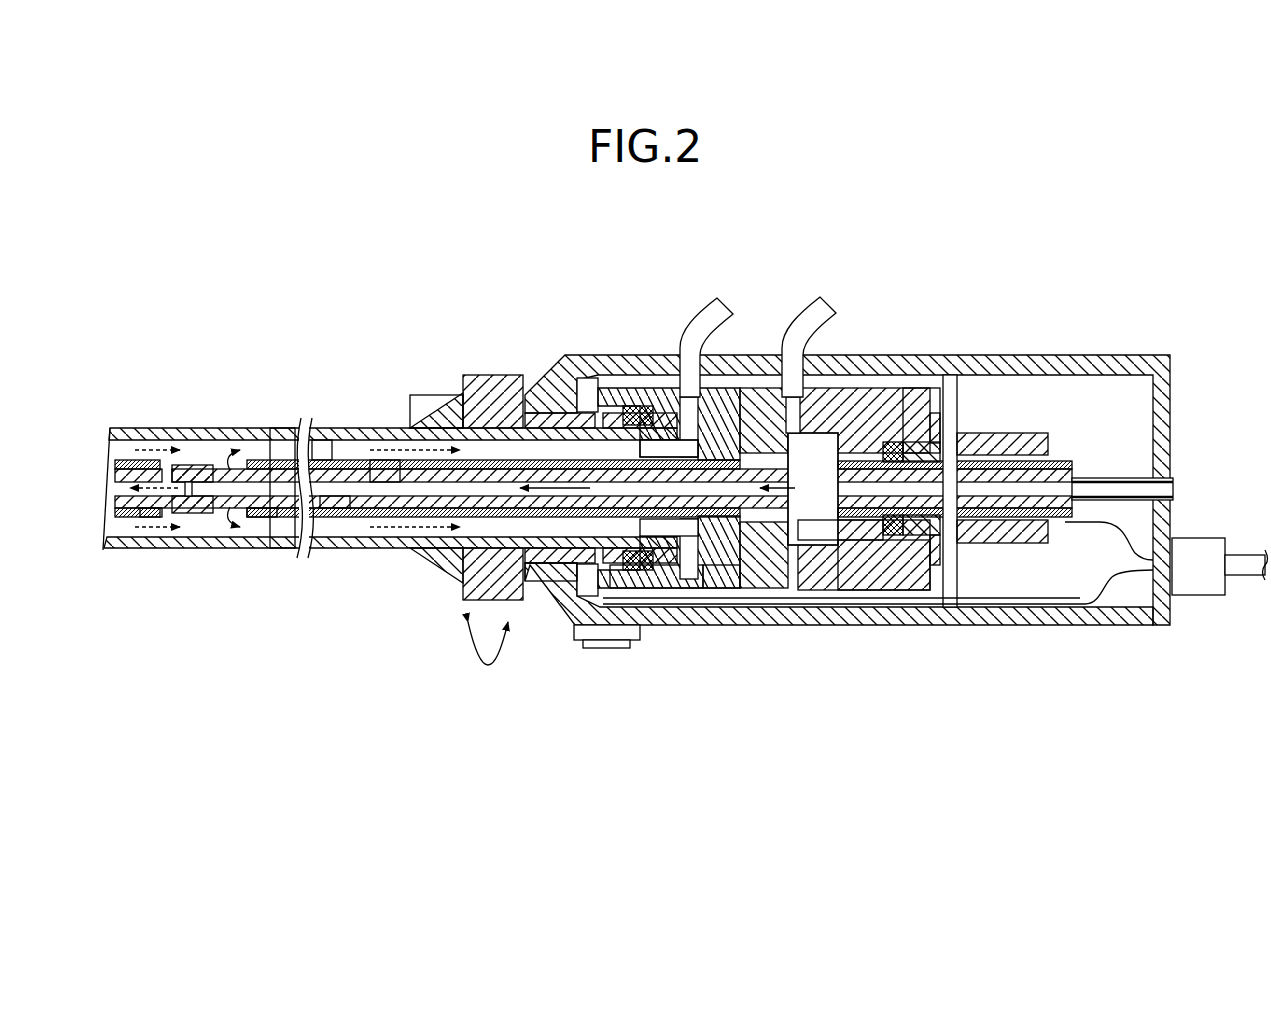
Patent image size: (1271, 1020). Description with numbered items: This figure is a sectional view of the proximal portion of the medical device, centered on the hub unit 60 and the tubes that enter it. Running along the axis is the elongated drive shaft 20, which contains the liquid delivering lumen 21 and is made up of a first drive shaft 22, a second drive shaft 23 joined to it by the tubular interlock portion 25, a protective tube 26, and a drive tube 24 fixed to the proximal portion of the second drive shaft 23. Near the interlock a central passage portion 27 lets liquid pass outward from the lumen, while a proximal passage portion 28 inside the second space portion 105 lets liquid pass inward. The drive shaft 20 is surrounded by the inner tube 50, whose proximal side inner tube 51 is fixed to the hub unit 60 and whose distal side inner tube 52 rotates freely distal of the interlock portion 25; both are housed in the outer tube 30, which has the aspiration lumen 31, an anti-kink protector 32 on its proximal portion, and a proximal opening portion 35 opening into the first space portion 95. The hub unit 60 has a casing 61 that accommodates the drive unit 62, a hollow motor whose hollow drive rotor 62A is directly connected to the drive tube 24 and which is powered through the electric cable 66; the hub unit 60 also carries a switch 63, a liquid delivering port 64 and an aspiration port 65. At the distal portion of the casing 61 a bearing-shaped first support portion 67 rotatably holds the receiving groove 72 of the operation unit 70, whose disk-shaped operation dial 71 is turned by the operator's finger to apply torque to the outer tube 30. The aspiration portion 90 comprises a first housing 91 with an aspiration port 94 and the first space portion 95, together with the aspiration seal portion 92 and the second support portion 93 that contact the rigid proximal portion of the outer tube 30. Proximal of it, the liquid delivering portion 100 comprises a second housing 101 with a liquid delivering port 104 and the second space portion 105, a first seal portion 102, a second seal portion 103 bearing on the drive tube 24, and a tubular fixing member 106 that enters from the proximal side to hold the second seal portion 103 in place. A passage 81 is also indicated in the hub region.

The drive shaft 20 is at (255, 469).
The liquid delivering lumen 21 is at (335, 508).
The first drive shaft 22 is at (125, 440).
The second drive shaft 23 is at (345, 460).
The drive tube 24 is at (950, 380).
The interlock portion 25 is at (193, 465).
The protective tube 26 is at (1115, 525).
The central passage portion 27 is at (191, 497).
The proximal passage portion 28 is at (795, 545).
The outer tube 30 is at (293, 428).
The aspiration lumen 31 is at (316, 448).
The anti-kink protector 32 is at (412, 426).
The proximal opening portion 35 is at (673, 414).
The inner tube 50 is at (388, 468).
The proximal side inner tube 51 is at (265, 517).
The distal side inner tube 52 is at (152, 518).
The hub unit 60 is at (495, 255).
The casing 61 is at (760, 365).
The drive unit 62 is at (1000, 433).
The hollow drive rotor 62A is at (1032, 458).
The switch 63 is at (605, 650).
The liquid delivering port 64 is at (810, 300).
The aspiration port 65 is at (708, 300).
The electric cable 66 is at (1260, 560).
The first support portion 67 is at (583, 603).
The operation unit 70 is at (462, 393).
The operation dial 71 is at (493, 375).
The receiving groove 72 is at (542, 567).
The vertical channel 81 is at (684, 420).
The aspiration portion 90 is at (765, 590).
The first housing 91 is at (718, 588).
The aspiration seal portion 92 is at (635, 570).
The second support portion 93 is at (662, 580).
The aspiration port 94 is at (690, 400).
The first space portion 95 is at (690, 580).
The liquid delivering portion 100 is at (878, 590).
The second housing 101 is at (850, 570).
The first seal portion 102 is at (892, 442).
The second seal portion 103 is at (920, 442).
The liquid delivering port 104 is at (807, 398).
The second space portion 105 is at (812, 545).
The fixing member 106 is at (935, 590).